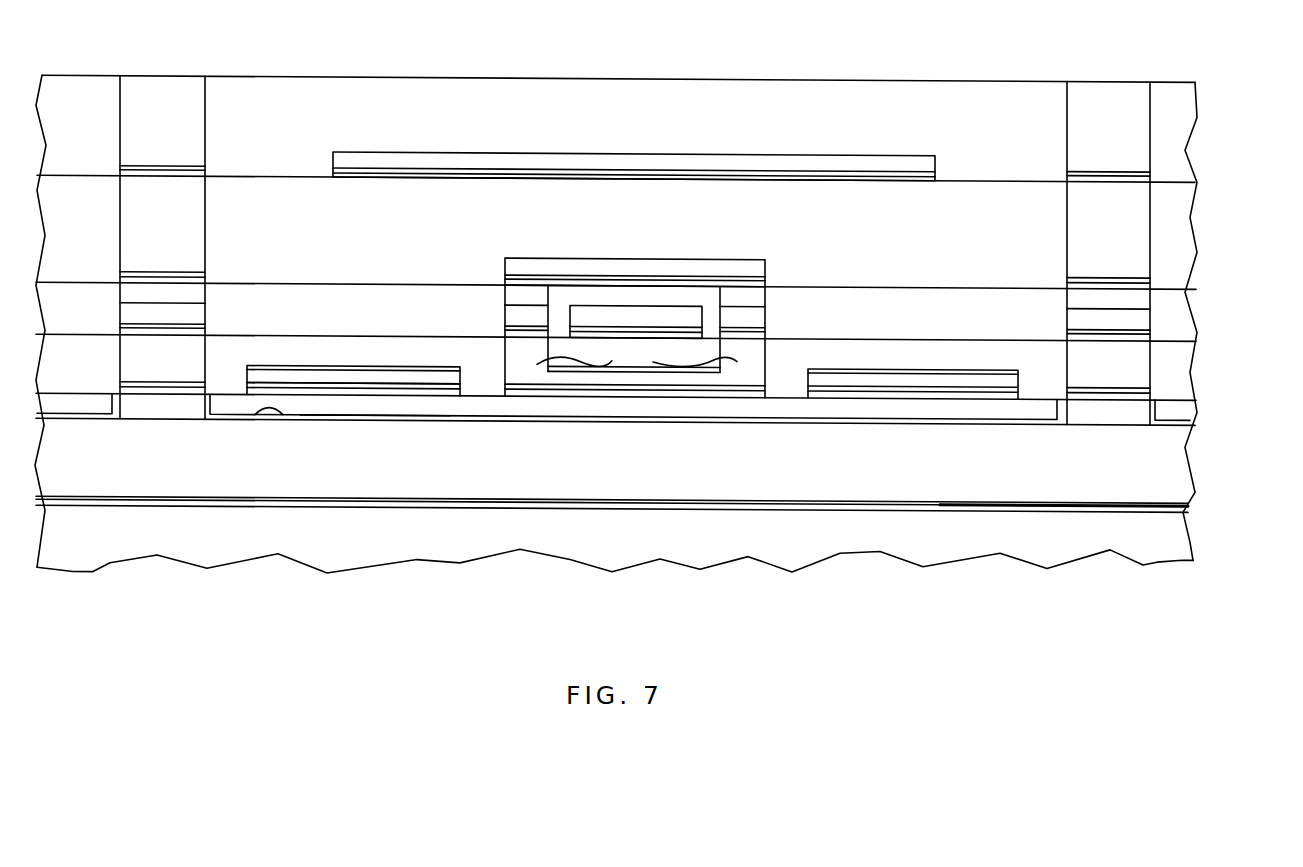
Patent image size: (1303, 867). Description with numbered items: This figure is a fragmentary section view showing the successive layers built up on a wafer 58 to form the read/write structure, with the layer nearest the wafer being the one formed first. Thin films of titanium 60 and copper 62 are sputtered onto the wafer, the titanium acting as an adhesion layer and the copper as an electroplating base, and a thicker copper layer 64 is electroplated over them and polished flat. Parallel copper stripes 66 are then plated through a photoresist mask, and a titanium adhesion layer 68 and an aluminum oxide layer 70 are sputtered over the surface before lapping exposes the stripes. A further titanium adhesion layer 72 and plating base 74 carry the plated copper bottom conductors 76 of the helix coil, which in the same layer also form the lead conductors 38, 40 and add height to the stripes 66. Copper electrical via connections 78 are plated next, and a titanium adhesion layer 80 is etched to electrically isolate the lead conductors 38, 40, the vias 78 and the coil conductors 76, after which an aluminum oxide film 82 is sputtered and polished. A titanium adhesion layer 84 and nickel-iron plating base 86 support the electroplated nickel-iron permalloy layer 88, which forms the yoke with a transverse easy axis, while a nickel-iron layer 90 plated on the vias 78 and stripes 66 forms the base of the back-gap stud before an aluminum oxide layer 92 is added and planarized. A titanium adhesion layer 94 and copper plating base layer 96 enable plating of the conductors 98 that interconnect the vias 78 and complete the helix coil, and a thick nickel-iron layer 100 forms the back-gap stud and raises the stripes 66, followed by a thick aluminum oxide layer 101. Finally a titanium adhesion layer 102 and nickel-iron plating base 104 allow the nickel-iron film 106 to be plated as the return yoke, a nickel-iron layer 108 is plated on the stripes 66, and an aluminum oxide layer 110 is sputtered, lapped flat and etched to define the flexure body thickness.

The lead conductor 38 is at (307, 378).
The lead conductor 40 is at (972, 378).
The wafer 58 is at (1160, 546).
The titanium thin film 60 is at (1052, 512).
The copper thin film 62 is at (916, 500).
The copper layer 64 is at (1170, 482).
The copper stripes 66 is at (158, 413).
The titanium adhesion layer 68 is at (283, 414).
The aluminum oxide layer 70 is at (353, 411).
The titanium adhesion layer 72 is at (442, 397).
The plating base 74 is at (435, 376).
The bottom conductors 76 is at (648, 383).
The electrical via connections 78 is at (637, 356).
The titanium adhesion layer 80 is at (348, 366).
The aluminum oxide film 82 is at (883, 353).
The titanium adhesion layer 84 is at (748, 338).
The nickel-iron plating base 86 is at (750, 325).
The nickel-iron permalloy layer 88 is at (630, 316).
The nickel-iron layer 90 is at (195, 295).
The aluminum oxide layer 92 is at (432, 293).
The titanium adhesion layer 94 is at (1085, 292).
The copper plating base layer 96 is at (1095, 282).
The conductors 98 is at (700, 262).
The nickel-iron layer 100 is at (1133, 220).
The aluminum oxide layer 101 is at (892, 226).
The titanium adhesion layer 102 is at (177, 177).
The nickel-iron plating base 104 is at (190, 166).
The nickel-iron film 106 is at (471, 158).
The nickel-iron layer 108 is at (1080, 150).
The aluminum oxide layer 110 is at (627, 86).